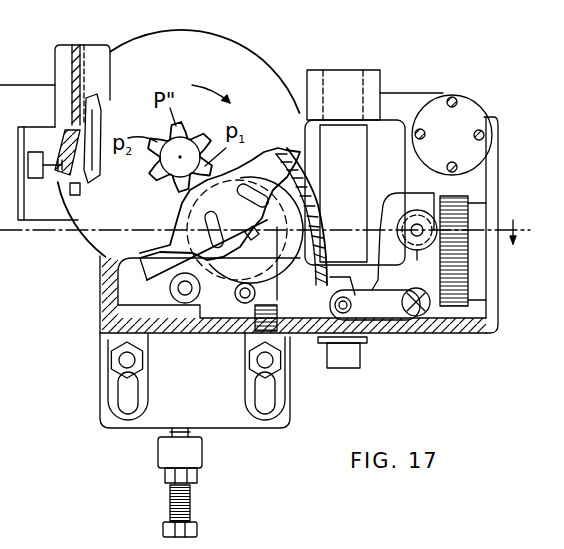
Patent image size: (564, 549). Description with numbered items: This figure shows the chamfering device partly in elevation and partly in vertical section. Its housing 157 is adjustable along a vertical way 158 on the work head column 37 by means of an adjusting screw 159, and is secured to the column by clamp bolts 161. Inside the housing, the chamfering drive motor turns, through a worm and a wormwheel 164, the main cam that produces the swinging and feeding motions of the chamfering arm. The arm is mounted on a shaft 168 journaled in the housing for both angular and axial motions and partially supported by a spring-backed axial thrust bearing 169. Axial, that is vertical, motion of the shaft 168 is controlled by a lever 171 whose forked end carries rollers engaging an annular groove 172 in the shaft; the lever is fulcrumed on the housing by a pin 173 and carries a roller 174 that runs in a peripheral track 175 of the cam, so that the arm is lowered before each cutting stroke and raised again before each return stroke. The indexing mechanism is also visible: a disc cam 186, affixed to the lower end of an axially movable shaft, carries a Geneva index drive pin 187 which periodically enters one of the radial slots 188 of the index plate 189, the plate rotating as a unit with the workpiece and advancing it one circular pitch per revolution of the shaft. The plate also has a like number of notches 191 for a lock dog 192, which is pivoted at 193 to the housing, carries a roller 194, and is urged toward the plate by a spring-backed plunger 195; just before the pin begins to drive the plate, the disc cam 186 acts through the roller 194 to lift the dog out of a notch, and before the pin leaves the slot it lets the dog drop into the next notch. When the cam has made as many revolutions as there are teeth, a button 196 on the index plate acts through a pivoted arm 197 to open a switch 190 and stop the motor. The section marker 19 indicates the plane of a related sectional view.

The vertical way 158 is at (84, 52).
The clamp bolts 161 is at (265, 362).
The button 196 is at (80, 155).
The pivoted arm 197 is at (80, 192).
The switch 190 is at (35, 180).
The index plate 189 is at (265, 170).
The radial slots 188 is at (228, 228).
The lock dog 192 is at (225, 238).
The notches 191 is at (175, 268).
The pivot 193 is at (186, 295).
The roller 194 is at (245, 304).
The spring-backed plunger 195 is at (270, 325).
The Geneva index drive pin 187 is at (300, 165).
The disc cam 186 is at (285, 195).
The annular groove 172 is at (343, 193).
The peripheral track 175 is at (404, 210).
The roller 174 is at (405, 250).
The lever 171 is at (400, 317).
The section line 19 is at (515, 246).
The housing 157 is at (400, 335).
The pin 173 is at (440, 325).
The wormwheel 164 is at (485, 338).
The shaft 168 is at (345, 300).
The spring-backed axial thrust bearing 169 is at (365, 360).
The work head column 37 is at (168, 455).
The adjusting screw 159 is at (176, 497).